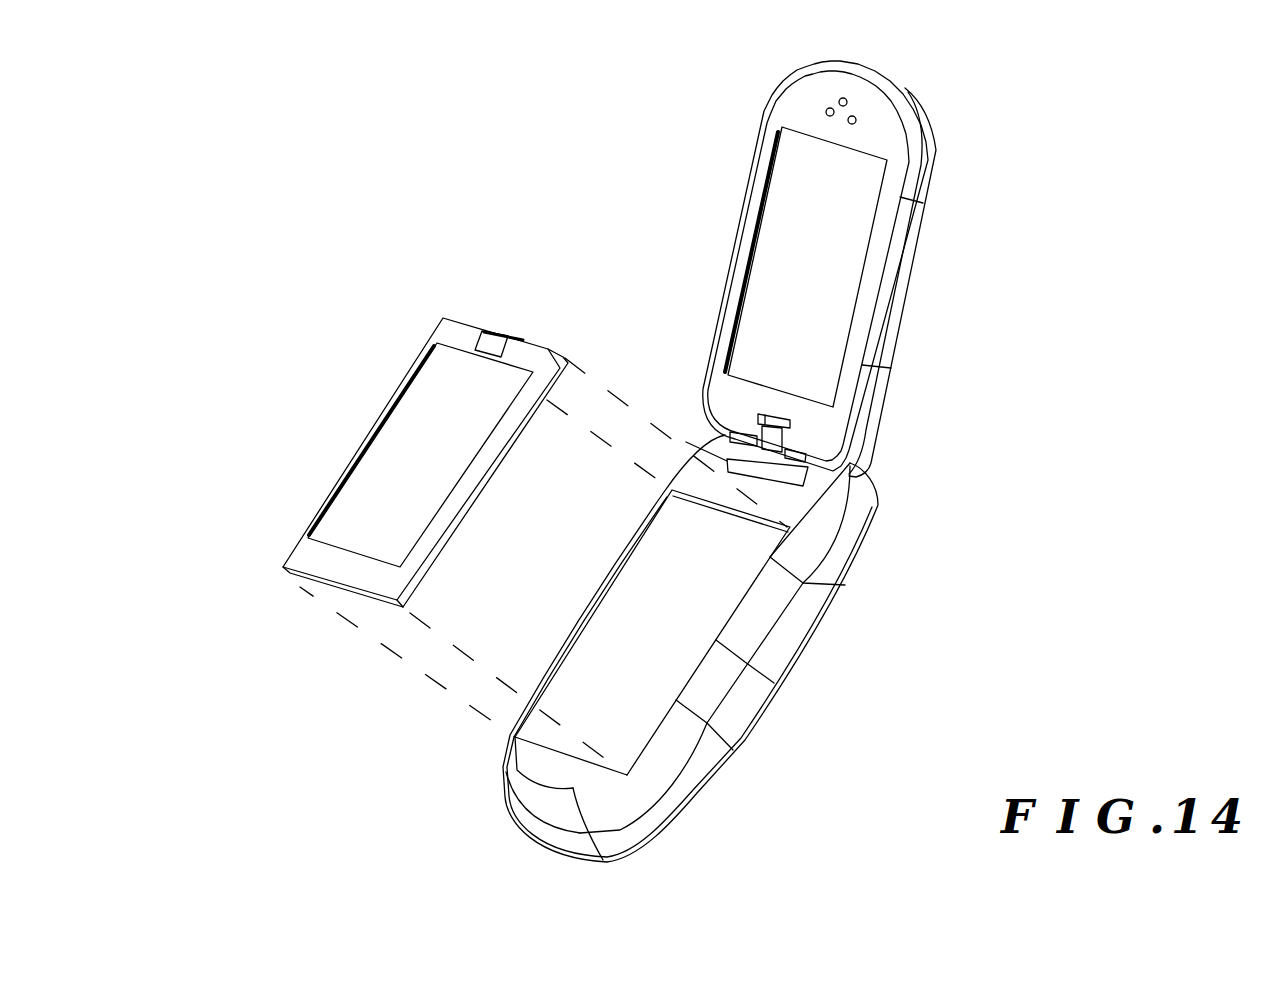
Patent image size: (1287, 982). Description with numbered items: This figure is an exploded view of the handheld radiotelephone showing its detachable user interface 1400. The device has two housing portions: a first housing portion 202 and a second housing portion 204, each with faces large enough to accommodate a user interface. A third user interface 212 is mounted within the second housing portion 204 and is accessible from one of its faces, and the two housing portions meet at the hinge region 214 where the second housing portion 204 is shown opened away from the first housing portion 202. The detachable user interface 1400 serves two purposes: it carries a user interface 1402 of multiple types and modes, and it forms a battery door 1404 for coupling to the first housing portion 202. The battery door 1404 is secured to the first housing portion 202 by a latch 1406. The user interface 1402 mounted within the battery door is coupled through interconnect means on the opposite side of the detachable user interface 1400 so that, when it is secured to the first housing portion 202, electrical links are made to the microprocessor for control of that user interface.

The first housing portion 202 is at (706, 782).
The second housing portion 204 is at (800, 269).
The third user interface 212 is at (773, 263).
The hinge 214 is at (745, 458).
The detachable user interface 1400 is at (386, 445).
The user interface 1402 is at (357, 493).
The battery door 1404 is at (307, 558).
The latch 1406 is at (499, 343).